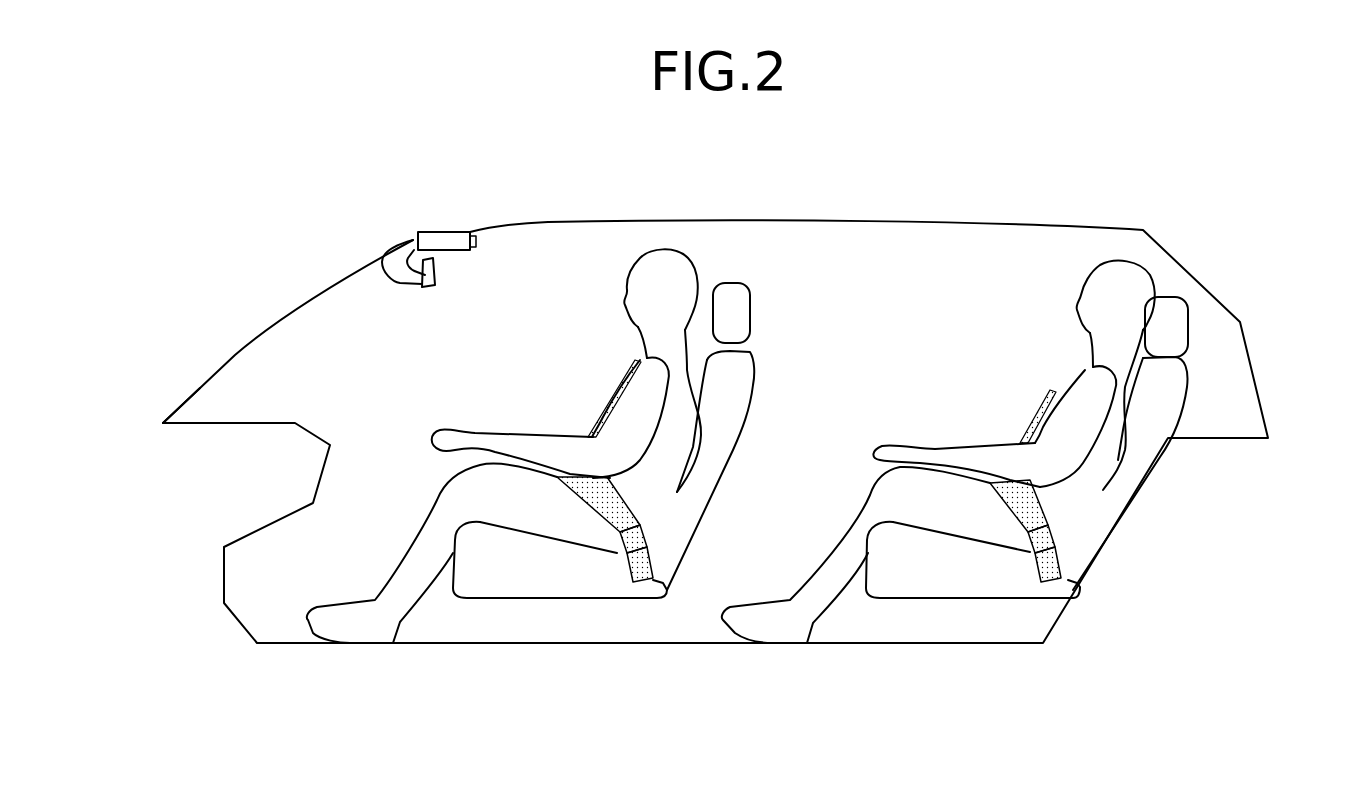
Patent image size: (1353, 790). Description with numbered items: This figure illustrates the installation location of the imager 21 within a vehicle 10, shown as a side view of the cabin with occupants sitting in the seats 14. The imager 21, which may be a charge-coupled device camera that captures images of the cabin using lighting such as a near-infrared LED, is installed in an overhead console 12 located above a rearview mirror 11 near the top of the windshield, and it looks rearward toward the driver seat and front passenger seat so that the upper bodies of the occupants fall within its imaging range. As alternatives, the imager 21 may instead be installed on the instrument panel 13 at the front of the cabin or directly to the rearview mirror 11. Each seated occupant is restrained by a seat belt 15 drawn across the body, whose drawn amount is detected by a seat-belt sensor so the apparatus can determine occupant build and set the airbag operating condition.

The vehicle 10 is at (1068, 182).
The rearview mirror 11 is at (383, 252).
The overhead console 12 is at (458, 232).
The instrument panel 13 is at (202, 423).
The seats 14 is at (740, 308).
The seat belt 15 is at (627, 573).
The imager 21 is at (440, 243).